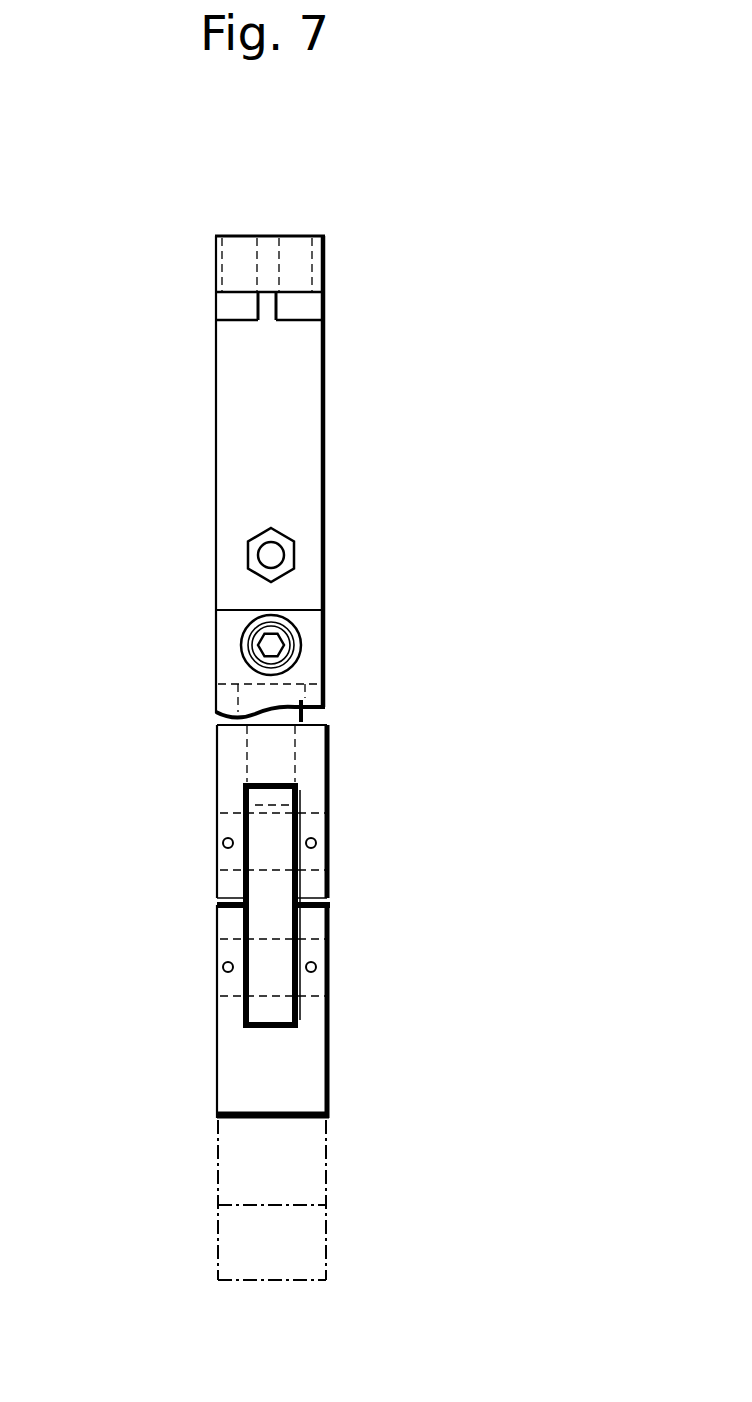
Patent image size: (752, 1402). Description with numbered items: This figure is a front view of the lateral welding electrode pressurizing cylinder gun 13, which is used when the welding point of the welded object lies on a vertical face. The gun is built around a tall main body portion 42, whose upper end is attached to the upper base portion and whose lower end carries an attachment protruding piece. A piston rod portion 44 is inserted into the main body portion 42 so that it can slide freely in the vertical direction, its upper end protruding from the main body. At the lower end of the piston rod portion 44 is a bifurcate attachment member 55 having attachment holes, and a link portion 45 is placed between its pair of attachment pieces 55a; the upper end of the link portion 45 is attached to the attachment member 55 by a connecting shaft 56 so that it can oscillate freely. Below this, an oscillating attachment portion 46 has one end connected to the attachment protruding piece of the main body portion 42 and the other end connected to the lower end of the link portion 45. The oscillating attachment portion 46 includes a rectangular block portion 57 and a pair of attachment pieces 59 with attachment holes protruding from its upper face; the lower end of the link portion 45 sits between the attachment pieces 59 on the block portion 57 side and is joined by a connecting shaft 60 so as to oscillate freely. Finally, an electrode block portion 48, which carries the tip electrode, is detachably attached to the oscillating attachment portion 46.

The lateral welding electrode pressurizing cylinder gun 13 is at (508, 245).
The main body portion 42 is at (214, 408).
The piston rod portion 44 is at (321, 760).
The link portion 45 is at (280, 838).
The oscillating attachment portion 46 is at (330, 1049).
The electrode block portion 48 is at (217, 1173).
The attachment member 55 is at (218, 752).
The attachment pieces 55a is at (221, 830).
The connecting shaft 56 is at (220, 872).
The block portion 57 is at (220, 1070).
The attachment pieces 59 is at (220, 924).
The connecting shaft 60 is at (220, 1005).